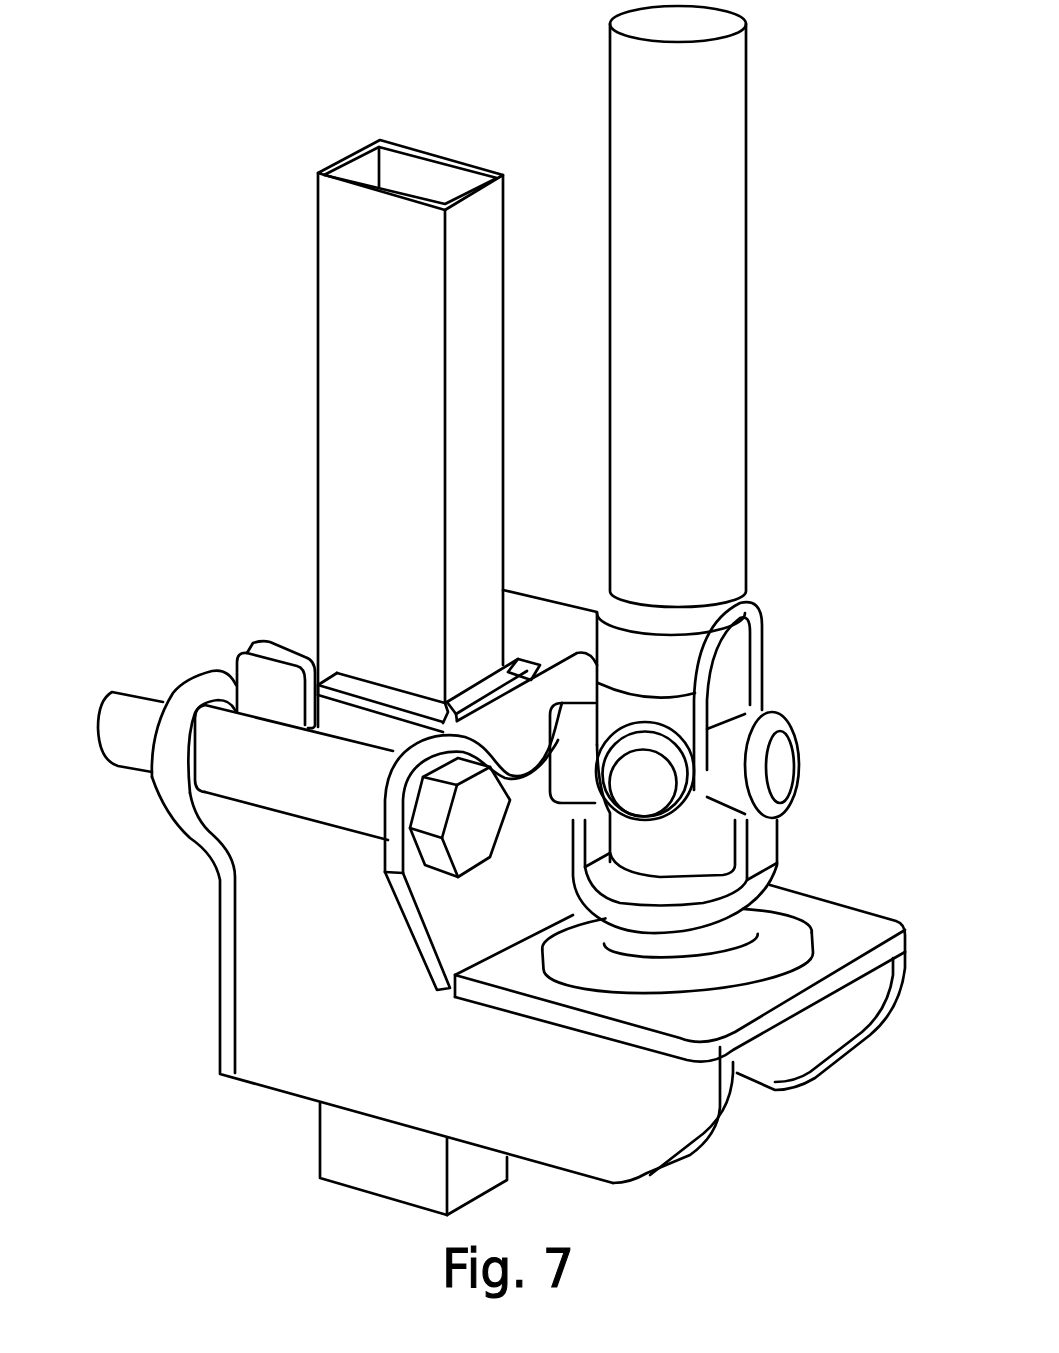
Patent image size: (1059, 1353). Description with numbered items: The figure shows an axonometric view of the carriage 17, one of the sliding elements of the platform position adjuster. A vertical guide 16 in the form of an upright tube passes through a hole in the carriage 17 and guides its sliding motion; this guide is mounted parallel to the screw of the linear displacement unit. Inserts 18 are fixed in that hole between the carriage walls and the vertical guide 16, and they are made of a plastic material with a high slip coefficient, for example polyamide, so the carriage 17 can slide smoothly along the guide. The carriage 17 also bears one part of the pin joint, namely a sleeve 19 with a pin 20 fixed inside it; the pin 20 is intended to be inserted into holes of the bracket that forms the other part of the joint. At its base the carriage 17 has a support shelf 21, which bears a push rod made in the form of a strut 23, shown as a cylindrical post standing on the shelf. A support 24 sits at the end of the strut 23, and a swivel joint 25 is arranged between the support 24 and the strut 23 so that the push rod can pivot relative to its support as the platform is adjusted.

The vertical guide 16 is at (360, 325).
The carriage 17 is at (298, 1008).
The inserts 18 is at (355, 685).
The sleeve 19 is at (272, 770).
The pin 20 is at (140, 745).
The support shelf 21 is at (837, 932).
The strut 23 is at (675, 383).
The support 24 is at (722, 965).
The swivel joint 25 is at (693, 735).